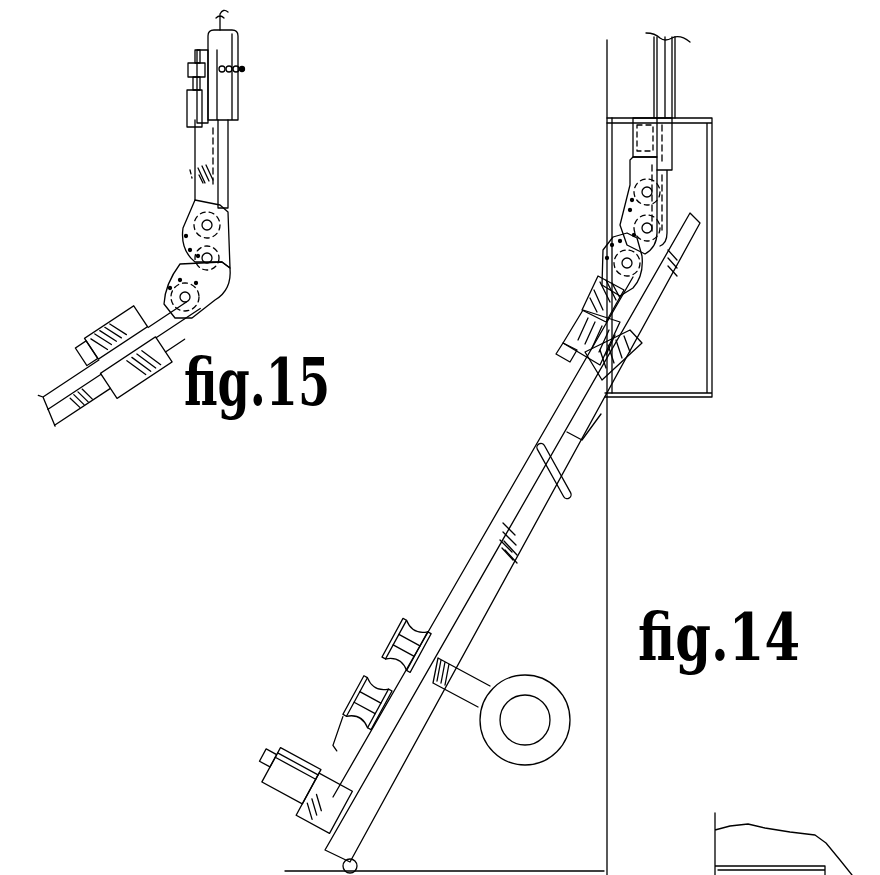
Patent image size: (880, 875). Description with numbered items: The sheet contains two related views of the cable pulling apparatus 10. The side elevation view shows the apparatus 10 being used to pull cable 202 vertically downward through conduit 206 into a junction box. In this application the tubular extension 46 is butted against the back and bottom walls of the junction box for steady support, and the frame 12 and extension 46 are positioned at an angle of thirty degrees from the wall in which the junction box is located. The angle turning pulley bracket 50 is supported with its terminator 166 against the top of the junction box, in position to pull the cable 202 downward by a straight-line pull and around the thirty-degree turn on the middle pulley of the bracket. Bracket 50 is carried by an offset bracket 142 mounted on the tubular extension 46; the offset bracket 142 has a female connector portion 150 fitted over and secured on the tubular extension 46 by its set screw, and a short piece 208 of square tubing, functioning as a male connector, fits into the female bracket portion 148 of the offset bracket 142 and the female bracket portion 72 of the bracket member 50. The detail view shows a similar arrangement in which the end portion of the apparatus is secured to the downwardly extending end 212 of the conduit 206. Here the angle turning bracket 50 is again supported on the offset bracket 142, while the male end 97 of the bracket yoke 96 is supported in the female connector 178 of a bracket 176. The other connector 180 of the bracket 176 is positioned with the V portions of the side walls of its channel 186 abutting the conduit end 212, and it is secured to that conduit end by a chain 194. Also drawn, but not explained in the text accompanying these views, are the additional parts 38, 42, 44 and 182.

In FIG. 14, the apparatus 10 is at (519, 470).
In FIG. 14, the frame 12 is at (525, 520).
In FIG. 14, the motor 38 is at (275, 760).
In FIG. 14, the roller 42 is at (352, 690).
In FIG. 14, the roller 44 is at (398, 625).
In FIG. 15, the tubular extension 46 is at (102, 398).
In FIG. 14, the tubular extension 46 is at (592, 417).
In FIG. 15, the angle turning pulley bracket 50 is at (100, 216).
In FIG. 14, the angle turning pulley bracket 50 is at (606, 211).
In FIG. 15, the female bracket portion 72 is at (134, 318).
In FIG. 14, the female bracket portion 72 is at (608, 262).
In FIG. 15, the bracket yoke 96 is at (192, 225).
In FIG. 15, the male end 97 is at (190, 170).
In FIG. 15, the offset bracket 142 is at (101, 341).
In FIG. 14, the offset bracket 142 is at (568, 366).
In FIG. 15, the female bracket portion 148 is at (100, 330).
In FIG. 14, the female bracket portion 148 is at (583, 322).
In FIG. 15, the female connector portion 150 is at (145, 385).
In FIG. 14, the female connector portion 150 is at (625, 367).
In FIG. 14, the terminator 166 is at (630, 138).
In FIG. 15, the bracket 176 is at (180, 95).
In FIG. 15, the female connector 178 is at (195, 155).
In FIG. 15, the connector 180 is at (195, 58).
In FIG. 15, the latch block 182 is at (186, 110).
In FIG. 15, the channel 186 is at (237, 40).
In FIG. 15, the chain 194 is at (244, 69).
In FIG. 14, the cable 202 is at (486, 530).
In FIG. 15, the conduit 206 is at (212, 22).
In FIG. 15, the short piece of square tubing 208 is at (78, 356).
In FIG. 14, the short piece of square tubing 208 is at (560, 370).
In FIG. 15, the downwardly extending end 212 is at (240, 120).